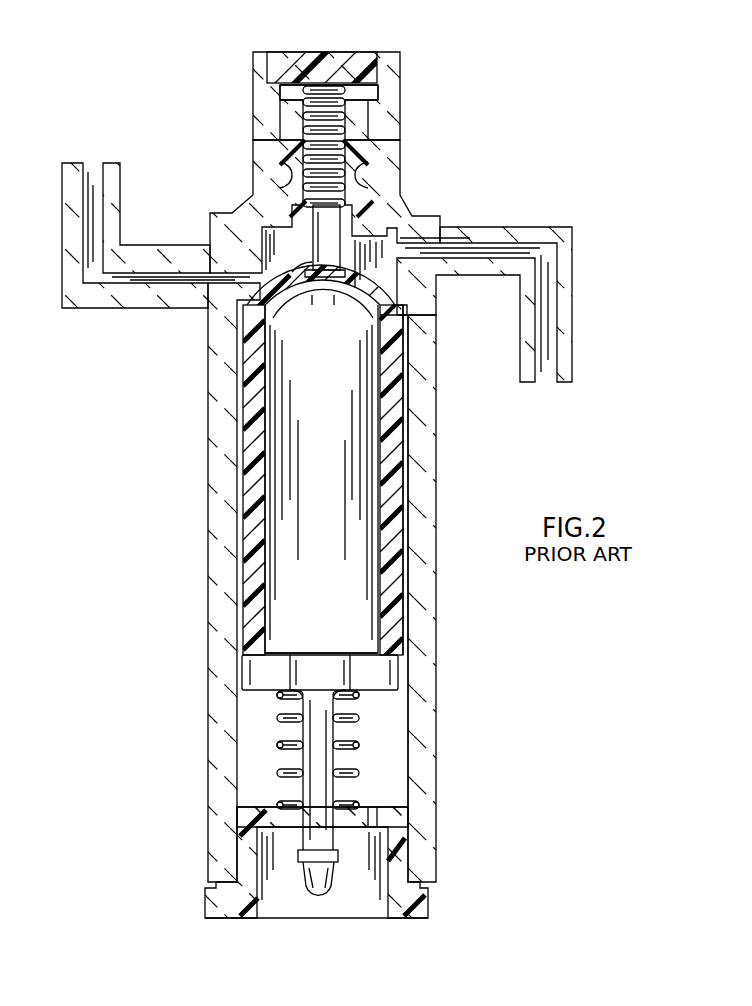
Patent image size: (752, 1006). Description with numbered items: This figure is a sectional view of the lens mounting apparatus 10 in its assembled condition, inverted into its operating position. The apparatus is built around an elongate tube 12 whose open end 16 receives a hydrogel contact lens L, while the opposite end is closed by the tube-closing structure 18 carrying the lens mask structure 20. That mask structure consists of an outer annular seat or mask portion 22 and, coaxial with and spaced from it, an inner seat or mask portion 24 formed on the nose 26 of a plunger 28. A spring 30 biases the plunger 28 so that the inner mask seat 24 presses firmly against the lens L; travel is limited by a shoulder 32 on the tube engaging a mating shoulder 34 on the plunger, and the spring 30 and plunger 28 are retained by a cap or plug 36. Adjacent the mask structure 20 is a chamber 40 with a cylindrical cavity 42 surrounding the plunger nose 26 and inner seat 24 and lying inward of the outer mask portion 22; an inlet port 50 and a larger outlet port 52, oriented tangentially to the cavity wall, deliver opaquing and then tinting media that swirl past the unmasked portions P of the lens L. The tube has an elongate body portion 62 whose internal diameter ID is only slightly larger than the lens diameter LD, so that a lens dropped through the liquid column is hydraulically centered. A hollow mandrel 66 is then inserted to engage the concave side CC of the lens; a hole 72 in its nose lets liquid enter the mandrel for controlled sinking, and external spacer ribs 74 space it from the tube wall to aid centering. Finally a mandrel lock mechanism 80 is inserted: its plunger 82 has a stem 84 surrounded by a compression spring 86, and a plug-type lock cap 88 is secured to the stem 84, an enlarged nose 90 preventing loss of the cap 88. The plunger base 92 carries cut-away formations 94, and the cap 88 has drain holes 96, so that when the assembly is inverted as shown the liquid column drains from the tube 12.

The lens mounting apparatus 10 is at (452, 470).
The elongate tube 12 is at (445, 497).
The open end of tube 16 is at (428, 890).
The closed end / tube-closing structure 18 is at (410, 200).
The lens mask structure 20 is at (345, 285).
The outer annular seat or mask portion 22 is at (405, 300).
The inner seat or mask portion 24 is at (350, 200).
The plunger nose 26 is at (345, 130).
The plunger 28 is at (360, 118).
The spring 30 is at (337, 88).
The tube shoulder 32 is at (258, 178).
The plunger shoulder 34 is at (280, 170).
The cap or plug 36 is at (305, 56).
The chamber 40 is at (290, 255).
The cylindrical cavity 42 is at (270, 253).
The inlet port 50 is at (72, 165).
The outlet port 52 is at (572, 297).
The elongate body portion of tube 62 is at (436, 616).
The mandrel 66 is at (392, 575).
The port or hole in mandrel nose 72 is at (323, 290).
The external spacer ribs 74 is at (408, 400).
The mandrel lock mechanism 80 is at (325, 771).
The plunger of lock mechanism 82 is at (320, 731).
The plunger stem 84 is at (387, 823).
The compression spring 86 is at (340, 822).
The lock cap 88 is at (420, 912).
The enlarged nose of plunger stem 90 is at (323, 896).
The enlarged base of plunger 92 is at (395, 668).
The cut-away formations 94 is at (352, 660).
The drain holes 96 is at (396, 841).
The unmasked portions of lens P is at (400, 258).
The hydrogel contact lens L is at (418, 282).
The concave side of lens CC is at (315, 278).
The lens diameter LD is at (392, 437).
The internal diameter of tube body portion ID is at (400, 470).